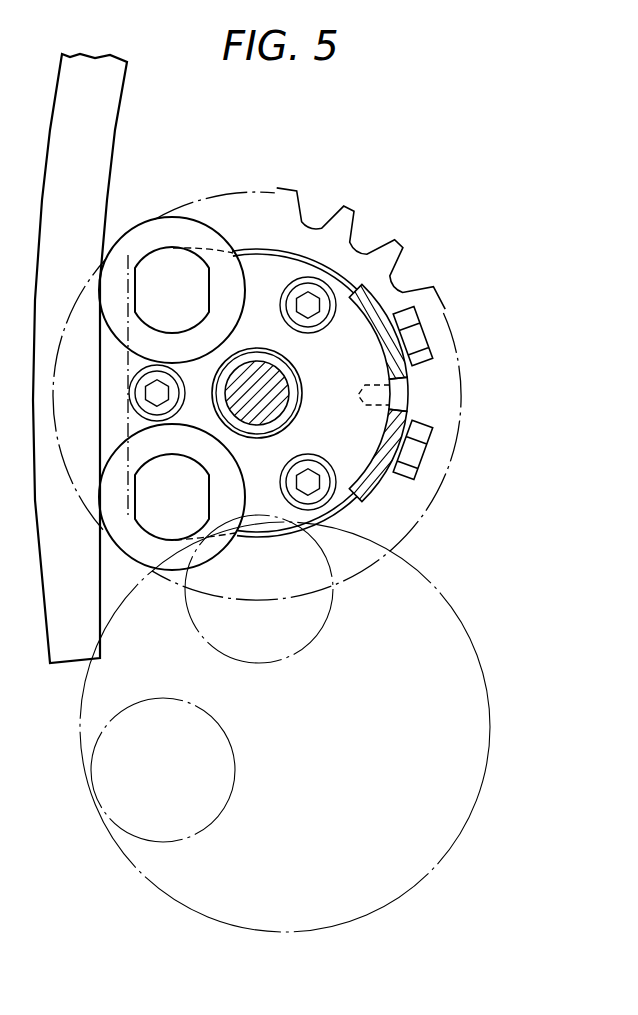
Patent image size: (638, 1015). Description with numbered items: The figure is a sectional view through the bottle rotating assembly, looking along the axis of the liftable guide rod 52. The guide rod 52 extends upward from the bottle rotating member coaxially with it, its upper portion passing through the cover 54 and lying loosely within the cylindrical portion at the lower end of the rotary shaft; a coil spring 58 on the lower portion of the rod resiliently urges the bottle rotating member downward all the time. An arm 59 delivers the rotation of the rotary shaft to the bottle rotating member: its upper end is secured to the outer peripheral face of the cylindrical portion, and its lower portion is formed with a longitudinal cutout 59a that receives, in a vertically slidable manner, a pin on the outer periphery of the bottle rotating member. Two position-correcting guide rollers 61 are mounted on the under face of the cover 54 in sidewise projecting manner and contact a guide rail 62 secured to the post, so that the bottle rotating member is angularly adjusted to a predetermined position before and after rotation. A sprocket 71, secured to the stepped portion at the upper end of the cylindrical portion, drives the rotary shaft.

The liftable guide rod 52 is at (270, 406).
The cover 54 is at (258, 503).
The coil spring 58 is at (282, 362).
The arm 59 is at (380, 488).
The longitudinal cutout 59a is at (398, 395).
The position-correcting guide rollers 61 is at (157, 237).
The guide rail 62 is at (100, 130).
The sprocket 71 is at (354, 211).